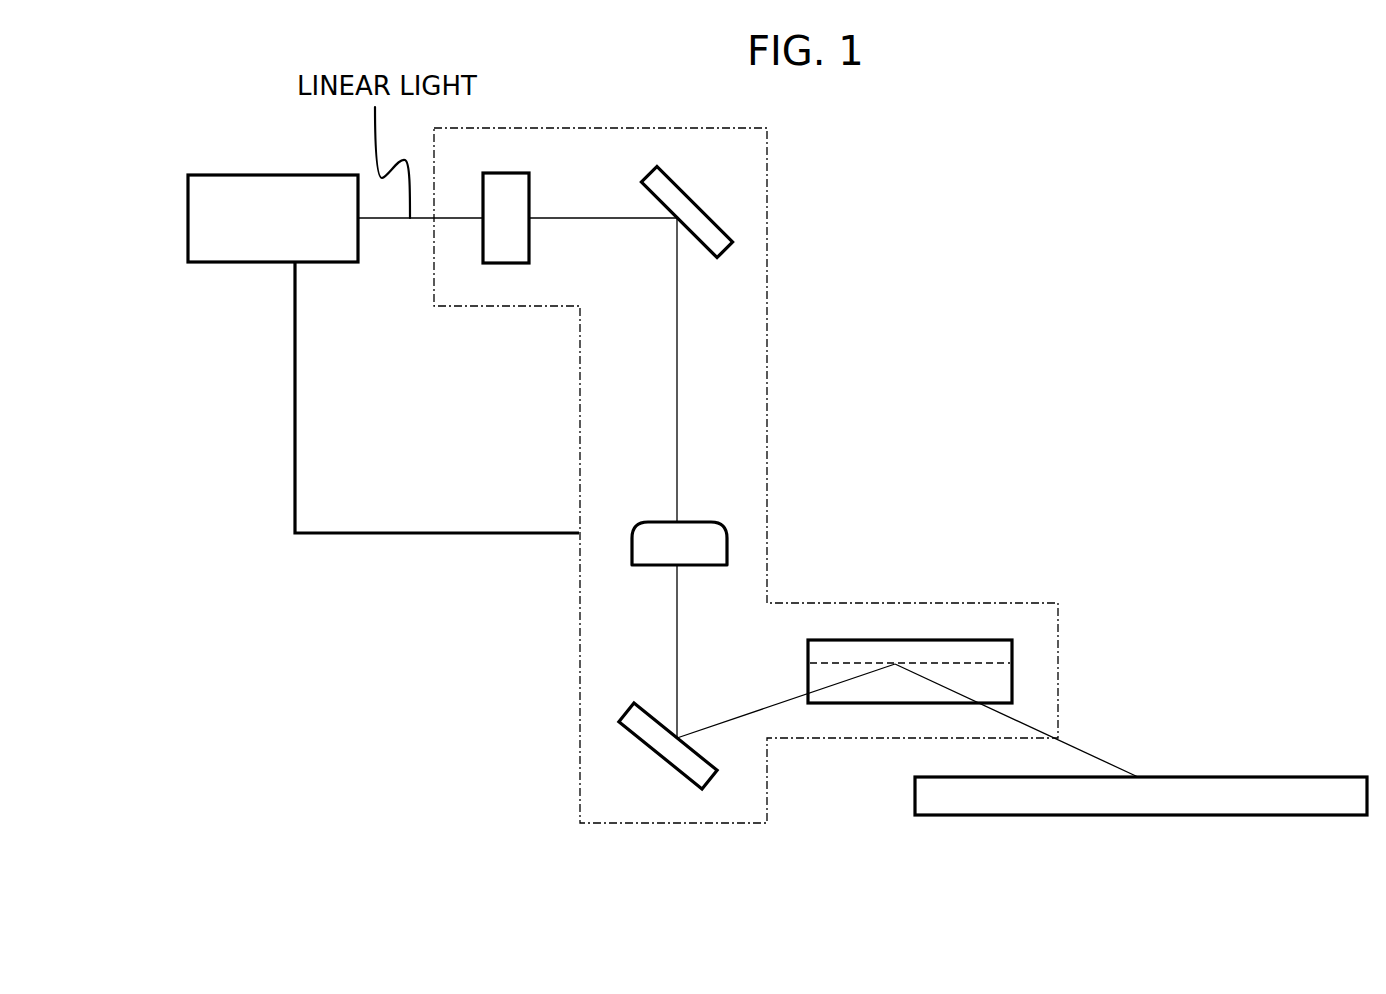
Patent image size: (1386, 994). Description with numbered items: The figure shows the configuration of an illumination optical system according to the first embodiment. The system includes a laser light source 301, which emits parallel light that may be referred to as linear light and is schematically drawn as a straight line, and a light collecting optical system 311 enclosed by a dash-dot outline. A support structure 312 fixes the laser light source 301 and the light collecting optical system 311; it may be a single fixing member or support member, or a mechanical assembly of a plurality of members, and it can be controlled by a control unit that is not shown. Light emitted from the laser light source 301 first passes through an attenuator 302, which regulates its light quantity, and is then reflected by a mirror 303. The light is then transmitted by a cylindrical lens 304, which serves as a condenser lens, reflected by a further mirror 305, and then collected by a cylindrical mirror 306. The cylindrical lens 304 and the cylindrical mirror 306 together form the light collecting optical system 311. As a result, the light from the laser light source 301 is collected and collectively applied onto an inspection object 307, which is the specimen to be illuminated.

The laser light source 301 is at (235, 262).
The attenuator 302 is at (502, 264).
The mirror 303 is at (718, 228).
The cylindrical lens 304 is at (727, 548).
The mirror 305 is at (630, 742).
The cylindrical mirror 306 is at (917, 640).
The inspection object 307 is at (1172, 815).
The light collecting optical system 311 is at (768, 383).
The support structure 312 is at (295, 480).